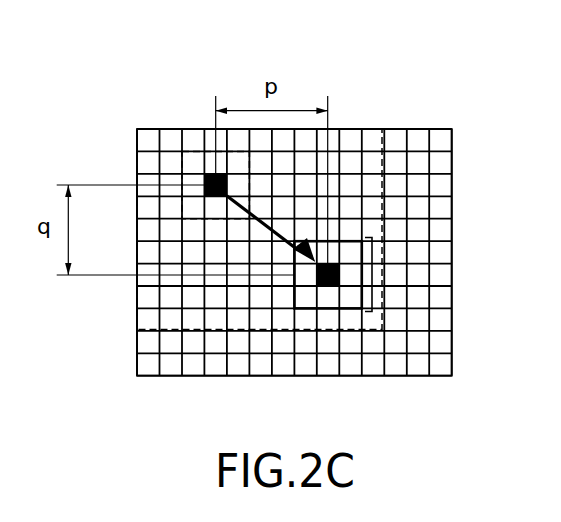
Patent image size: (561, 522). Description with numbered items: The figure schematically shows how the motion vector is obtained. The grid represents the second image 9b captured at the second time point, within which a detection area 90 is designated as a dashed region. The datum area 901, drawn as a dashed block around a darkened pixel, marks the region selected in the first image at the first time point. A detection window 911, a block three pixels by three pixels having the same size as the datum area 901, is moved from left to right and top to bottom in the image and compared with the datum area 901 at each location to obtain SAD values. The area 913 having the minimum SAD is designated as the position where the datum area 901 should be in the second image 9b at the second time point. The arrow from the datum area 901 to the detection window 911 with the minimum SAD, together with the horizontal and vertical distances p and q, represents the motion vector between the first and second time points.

The second image 9b is at (124, 114).
The detection area 90 is at (373, 124).
The datum area 901 is at (182, 172).
The detection window 911 is at (294, 297).
The area with the minimum SAD 913 is at (373, 274).